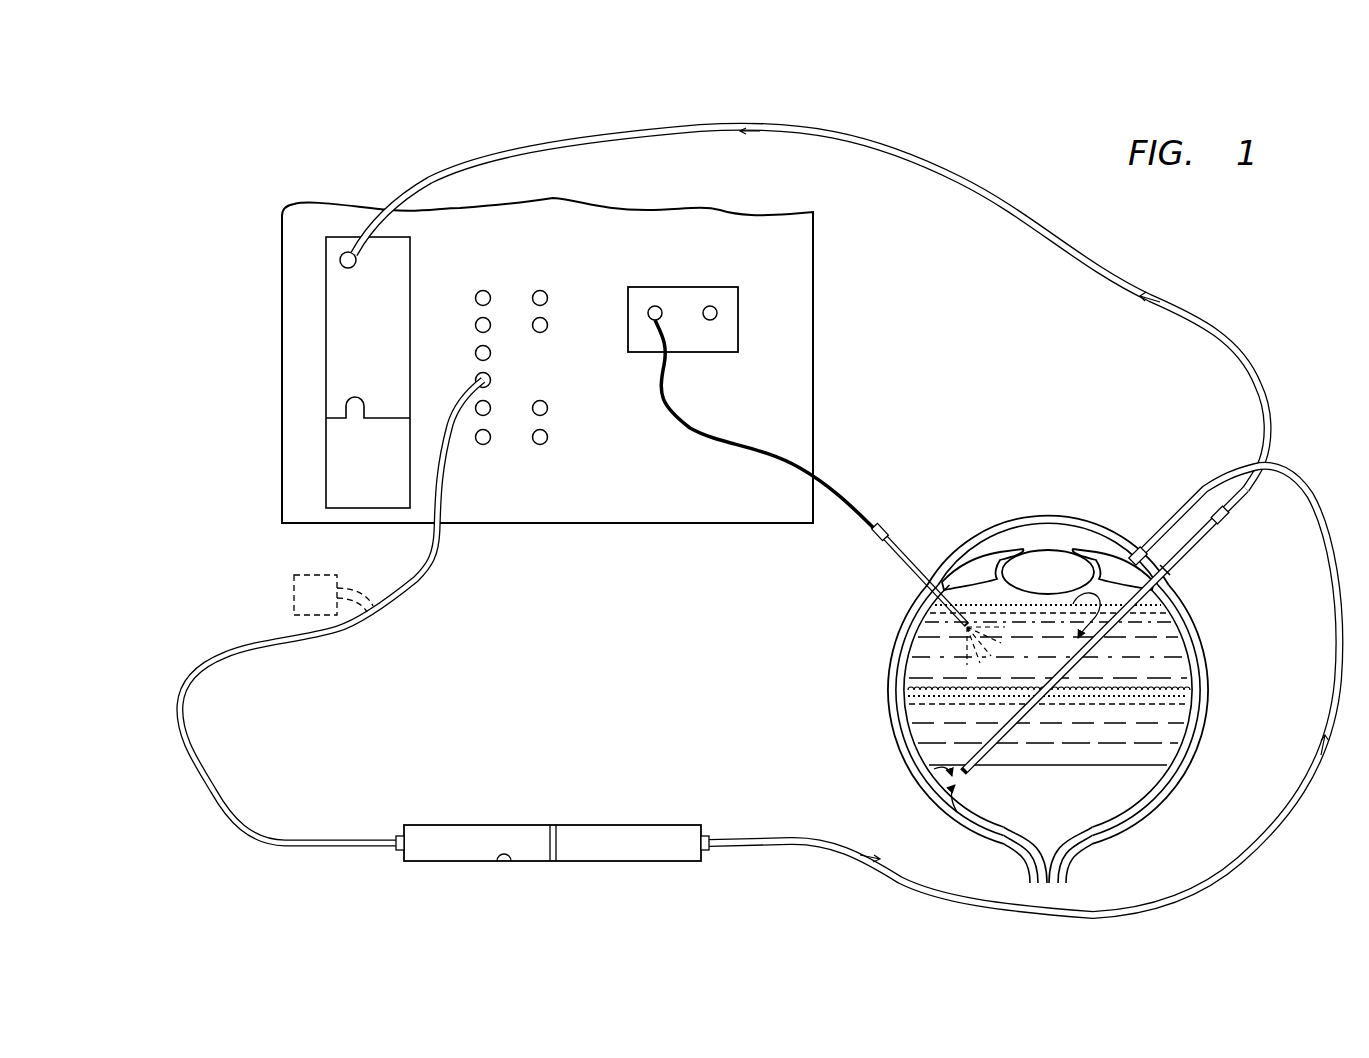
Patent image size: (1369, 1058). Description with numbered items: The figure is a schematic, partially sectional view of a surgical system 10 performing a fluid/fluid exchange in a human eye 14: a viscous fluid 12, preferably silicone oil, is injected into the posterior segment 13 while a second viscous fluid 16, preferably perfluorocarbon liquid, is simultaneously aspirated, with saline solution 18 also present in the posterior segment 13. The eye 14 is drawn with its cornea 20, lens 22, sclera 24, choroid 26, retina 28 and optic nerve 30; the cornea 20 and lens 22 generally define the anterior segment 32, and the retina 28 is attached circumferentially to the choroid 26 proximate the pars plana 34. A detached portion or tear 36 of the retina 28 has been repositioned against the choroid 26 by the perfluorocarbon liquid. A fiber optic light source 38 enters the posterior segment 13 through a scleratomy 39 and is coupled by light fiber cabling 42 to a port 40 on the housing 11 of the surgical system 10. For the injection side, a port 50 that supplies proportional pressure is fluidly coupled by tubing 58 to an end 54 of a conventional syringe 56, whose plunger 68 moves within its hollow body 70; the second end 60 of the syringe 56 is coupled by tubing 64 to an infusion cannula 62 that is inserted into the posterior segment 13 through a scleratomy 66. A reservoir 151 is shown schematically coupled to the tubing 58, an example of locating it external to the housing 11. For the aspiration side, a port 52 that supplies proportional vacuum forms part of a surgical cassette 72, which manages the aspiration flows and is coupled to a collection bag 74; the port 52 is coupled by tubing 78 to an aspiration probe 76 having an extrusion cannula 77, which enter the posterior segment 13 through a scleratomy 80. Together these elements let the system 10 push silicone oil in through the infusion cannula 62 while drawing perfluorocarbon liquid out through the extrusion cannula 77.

The surgical system 10 is at (272, 148).
The housing 11 is at (625, 524).
The viscous fluid 12 is at (1031, 670).
The posterior segment 13 is at (926, 685).
The human eye 14 is at (868, 625).
The second viscous fluid 16 is at (578, 132).
The saline solution 18 is at (1064, 736).
The cornea 20 is at (1004, 528).
The lens 22 is at (1062, 548).
The sclera 24 is at (1208, 678).
The choroid 26 is at (1205, 706).
The retina 28 is at (1160, 792).
The optic nerve 30 is at (1062, 885).
The anterior segment 32 is at (1041, 534).
The pars plana 34 is at (1148, 548).
The detached portion or tear 36 is at (940, 796).
The fiber optic light source 38 is at (876, 546).
The scleratomy 39 is at (926, 588).
The port 40 is at (655, 305).
The light fiber cabling 42 is at (826, 482).
The port 50 is at (478, 377).
The port 52 is at (356, 268).
The end 54 is at (400, 828).
The syringe 56 is at (540, 796).
The tubing 58 is at (214, 657).
The second end 60 is at (710, 828).
The infusion cannula 62 is at (1073, 604).
The tubing 64 is at (888, 876).
The scleratomy 66 is at (1135, 548).
The plunger 68 is at (553, 862).
The hollow body 70 is at (504, 862).
The surgical cassette 72 is at (410, 262).
The collection bag 74 is at (381, 473).
The aspiration probe 76 is at (1224, 525).
The extrusion cannula 77 is at (1080, 680).
The tubing 78 is at (1022, 218).
The scleratomy 80 is at (1172, 574).
The reservoir 151 is at (294, 594).